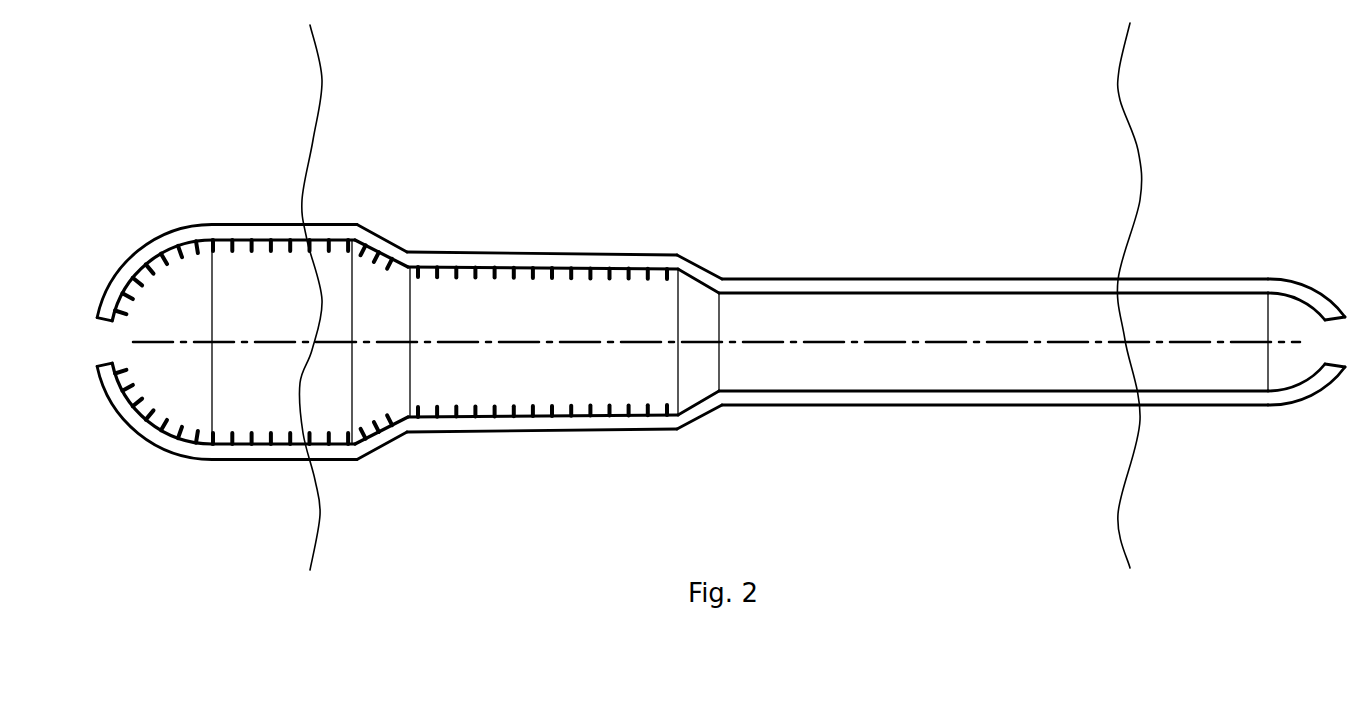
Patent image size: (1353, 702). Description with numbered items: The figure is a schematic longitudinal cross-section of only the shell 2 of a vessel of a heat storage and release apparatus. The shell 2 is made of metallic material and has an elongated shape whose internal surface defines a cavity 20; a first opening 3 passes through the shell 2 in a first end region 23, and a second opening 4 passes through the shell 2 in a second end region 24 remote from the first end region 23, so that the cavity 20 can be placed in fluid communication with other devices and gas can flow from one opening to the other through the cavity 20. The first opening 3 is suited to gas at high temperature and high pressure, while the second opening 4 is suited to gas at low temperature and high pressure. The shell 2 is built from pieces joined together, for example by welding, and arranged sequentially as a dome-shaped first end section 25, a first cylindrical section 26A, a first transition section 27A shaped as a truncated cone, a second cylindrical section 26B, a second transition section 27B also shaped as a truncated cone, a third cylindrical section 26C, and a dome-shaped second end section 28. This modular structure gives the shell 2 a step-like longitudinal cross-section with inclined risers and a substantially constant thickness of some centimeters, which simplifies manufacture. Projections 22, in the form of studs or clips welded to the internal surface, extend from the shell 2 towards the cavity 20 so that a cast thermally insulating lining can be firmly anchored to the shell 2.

The shell 2 is at (830, 122).
The first opening 3 is at (102, 342).
The second opening 4 is at (1335, 342).
The cavity 20 is at (585, 307).
The projections 22 is at (208, 250).
The first end region 23 is at (320, 515).
The second end region 24 is at (1118, 514).
The first end section 25 is at (167, 305).
The first cylindrical section 26A is at (252, 285).
The second cylindrical section 26B is at (527, 307).
The third cylindrical section 26C is at (928, 320).
The first transition section 27A is at (380, 293).
The second transition section 27B is at (693, 310).
The second end section 28 is at (1295, 323).